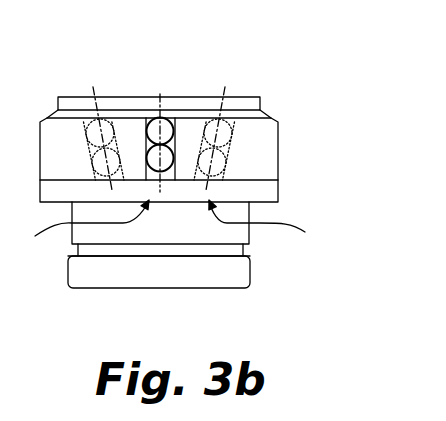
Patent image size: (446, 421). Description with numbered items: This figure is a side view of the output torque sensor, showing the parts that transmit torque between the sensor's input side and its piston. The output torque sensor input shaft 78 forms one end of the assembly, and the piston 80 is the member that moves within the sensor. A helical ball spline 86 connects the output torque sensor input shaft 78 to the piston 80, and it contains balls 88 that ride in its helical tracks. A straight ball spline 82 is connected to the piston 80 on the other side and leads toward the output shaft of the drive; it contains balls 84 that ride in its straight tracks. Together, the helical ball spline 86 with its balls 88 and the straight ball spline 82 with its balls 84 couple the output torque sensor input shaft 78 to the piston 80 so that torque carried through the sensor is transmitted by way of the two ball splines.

The output torque sensor input shaft 78 is at (242, 150).
The piston 80 is at (191, 124).
The straight ball spline 82 is at (78, 169).
The balls of straight ball spline 84 is at (152, 128).
The helical ball spline 86 is at (272, 223).
The balls of helical ball spline 88 is at (237, 135).